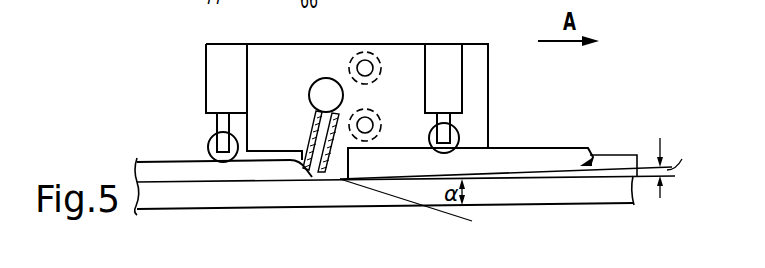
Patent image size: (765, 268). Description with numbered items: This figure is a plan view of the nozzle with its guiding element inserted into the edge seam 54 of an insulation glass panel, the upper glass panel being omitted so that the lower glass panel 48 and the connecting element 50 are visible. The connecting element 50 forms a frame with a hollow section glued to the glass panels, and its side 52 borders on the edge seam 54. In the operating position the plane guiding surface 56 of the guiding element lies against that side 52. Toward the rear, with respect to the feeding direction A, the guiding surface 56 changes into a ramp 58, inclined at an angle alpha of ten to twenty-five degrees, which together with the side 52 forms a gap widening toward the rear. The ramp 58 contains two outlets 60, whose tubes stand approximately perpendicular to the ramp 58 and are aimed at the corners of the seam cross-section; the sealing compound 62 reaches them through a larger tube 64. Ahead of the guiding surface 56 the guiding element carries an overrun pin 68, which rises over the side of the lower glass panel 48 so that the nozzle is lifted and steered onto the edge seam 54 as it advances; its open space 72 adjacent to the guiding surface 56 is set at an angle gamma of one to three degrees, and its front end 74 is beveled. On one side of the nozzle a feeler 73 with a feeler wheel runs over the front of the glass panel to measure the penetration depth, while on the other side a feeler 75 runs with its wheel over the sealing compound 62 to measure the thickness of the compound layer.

The lower glass panel 48 is at (608, 157).
The connecting element with hollow section 50 is at (628, 204).
The side of the connecting element 52 is at (623, 172).
The edge seam 54 is at (670, 138).
The guiding surface 56 is at (342, 182).
The ramp 58 is at (305, 164).
The outlets 60 is at (315, 173).
The sealing compound 62 is at (157, 172).
The tube 64 is at (322, 88).
The overrun pin 68 is at (507, 158).
The open space of the overrun pin 72 is at (522, 178).
The feeler 73 is at (443, 52).
The front end 74 is at (585, 178).
The feeler 75 is at (212, 80).